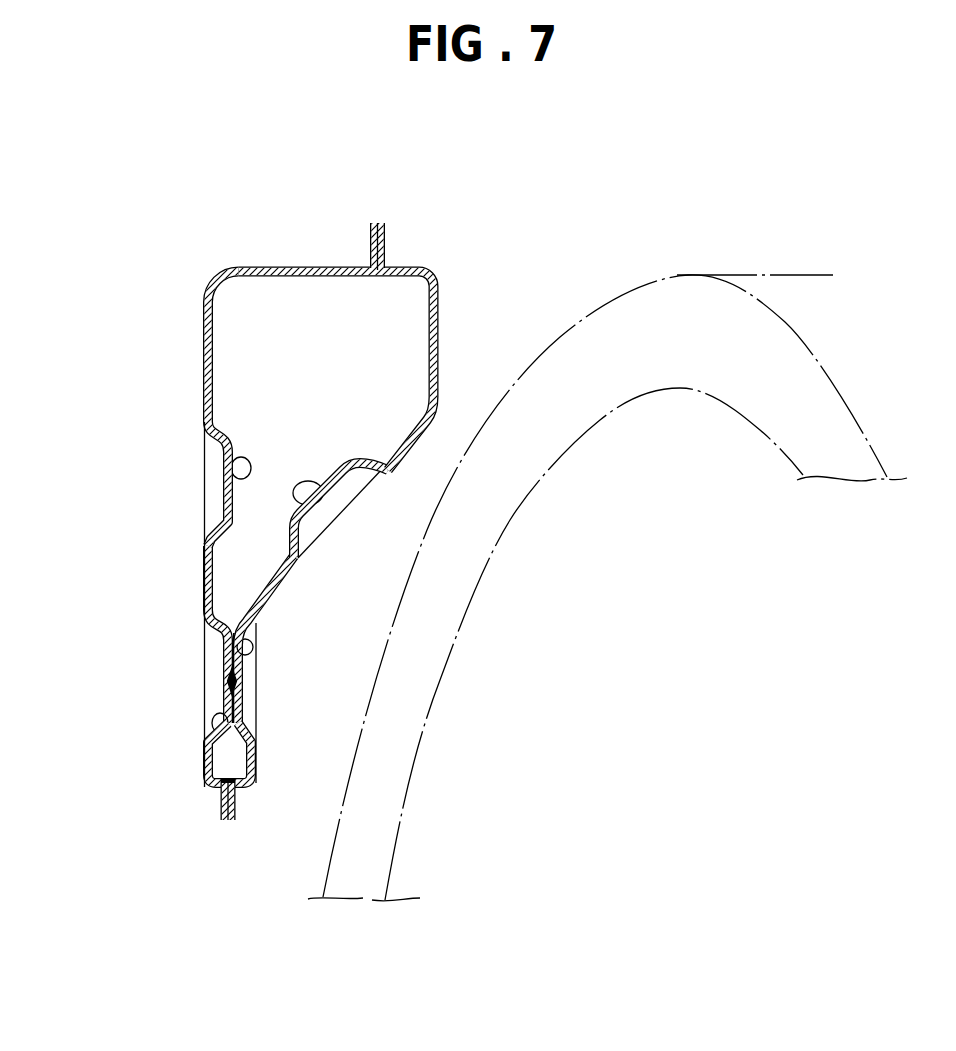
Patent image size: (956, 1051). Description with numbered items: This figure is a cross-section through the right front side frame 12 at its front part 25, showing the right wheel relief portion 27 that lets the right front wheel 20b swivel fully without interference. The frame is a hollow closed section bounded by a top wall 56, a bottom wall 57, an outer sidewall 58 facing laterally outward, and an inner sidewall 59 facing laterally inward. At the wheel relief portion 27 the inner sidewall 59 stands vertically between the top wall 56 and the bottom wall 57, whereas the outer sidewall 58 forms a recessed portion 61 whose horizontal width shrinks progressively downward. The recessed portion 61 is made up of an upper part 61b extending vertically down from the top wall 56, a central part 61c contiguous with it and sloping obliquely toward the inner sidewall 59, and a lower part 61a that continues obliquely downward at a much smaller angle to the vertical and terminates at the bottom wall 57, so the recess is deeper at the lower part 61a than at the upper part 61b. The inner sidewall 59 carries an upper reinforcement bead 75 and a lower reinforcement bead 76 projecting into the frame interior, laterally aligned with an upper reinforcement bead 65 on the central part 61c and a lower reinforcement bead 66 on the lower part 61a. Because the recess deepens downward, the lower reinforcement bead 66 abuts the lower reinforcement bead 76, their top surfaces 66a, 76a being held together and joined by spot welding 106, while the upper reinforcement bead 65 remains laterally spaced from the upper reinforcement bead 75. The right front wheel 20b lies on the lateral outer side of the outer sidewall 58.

The right front side frame 12 is at (256, 196).
The front part 25 is at (203, 305).
The top wall 56 is at (307, 268).
The outer sidewall 58 is at (440, 335).
The inner sidewall 59 is at (204, 365).
The upper reinforcement bead 75 is at (222, 450).
The top surface 76a is at (208, 611).
The lower reinforcement bead 76 is at (214, 643).
The spot welding 106 is at (224, 682).
The lower reinforcement bead 66 is at (251, 692).
The top surface 66a is at (254, 742).
The lower part 61a is at (256, 762).
The bottom wall 57 is at (214, 790).
The upper part 61b is at (440, 308).
The central part 61c is at (392, 462).
The upper reinforcement bead 65 is at (323, 490).
The recessed portion 61 is at (282, 583).
The right wheel relief portion 27 is at (436, 442).
The right front wheel 20b is at (775, 293).